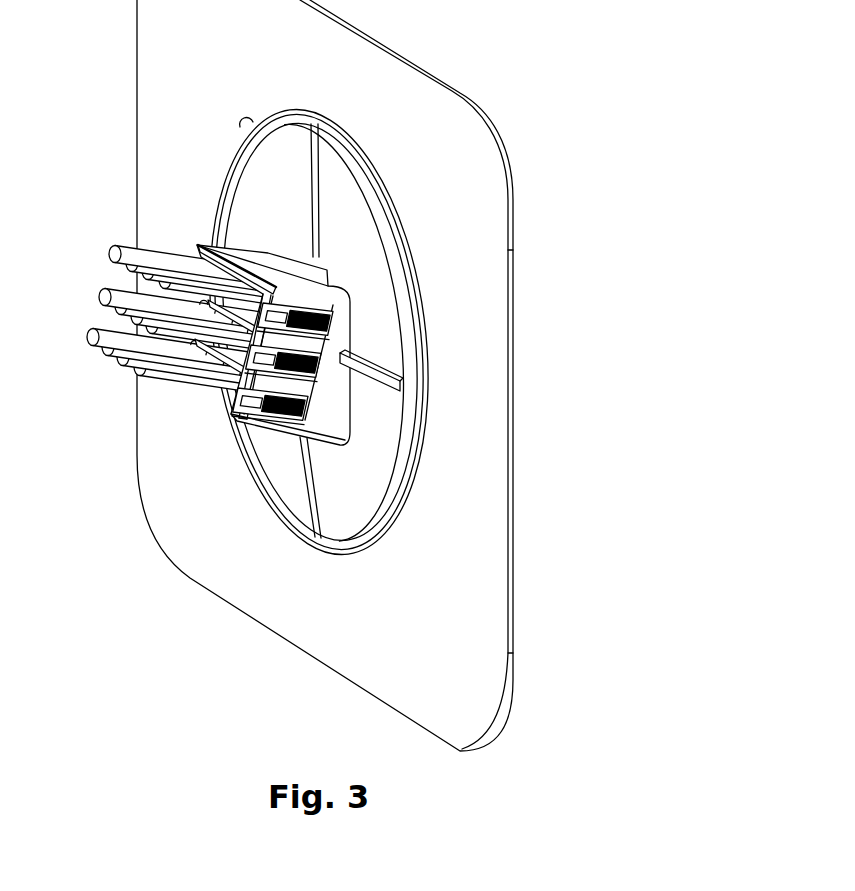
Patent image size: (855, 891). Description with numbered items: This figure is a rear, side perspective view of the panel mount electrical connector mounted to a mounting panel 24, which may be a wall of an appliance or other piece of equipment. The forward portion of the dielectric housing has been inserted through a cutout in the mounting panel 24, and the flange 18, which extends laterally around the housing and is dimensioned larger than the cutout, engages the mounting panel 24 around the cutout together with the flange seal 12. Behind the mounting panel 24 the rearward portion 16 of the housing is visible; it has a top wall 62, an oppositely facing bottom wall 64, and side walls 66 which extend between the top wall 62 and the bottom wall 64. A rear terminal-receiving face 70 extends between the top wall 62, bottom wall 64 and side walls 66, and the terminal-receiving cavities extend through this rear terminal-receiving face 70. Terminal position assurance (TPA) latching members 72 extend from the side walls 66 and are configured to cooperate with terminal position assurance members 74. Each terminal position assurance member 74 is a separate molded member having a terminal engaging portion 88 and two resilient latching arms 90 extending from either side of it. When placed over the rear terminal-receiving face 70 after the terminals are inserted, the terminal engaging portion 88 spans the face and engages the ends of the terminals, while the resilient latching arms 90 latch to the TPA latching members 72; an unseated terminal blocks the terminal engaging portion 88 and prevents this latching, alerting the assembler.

The flange seal 12 is at (417, 483).
The mounting panel 24 is at (462, 145).
The flange 18 is at (363, 508).
The rearward portion 16 is at (246, 283).
The terminal engaging portion 88 is at (115, 313).
The terminal position assurance member 74 is at (247, 368).
The bottom wall 64 is at (276, 415).
The top wall 62 is at (277, 267).
The rear terminal-receiving face 70 is at (233, 412).
The resilient latching arm 90 is at (236, 416).
The TPA latching member 72 is at (320, 313).
The side wall 66 is at (340, 337).